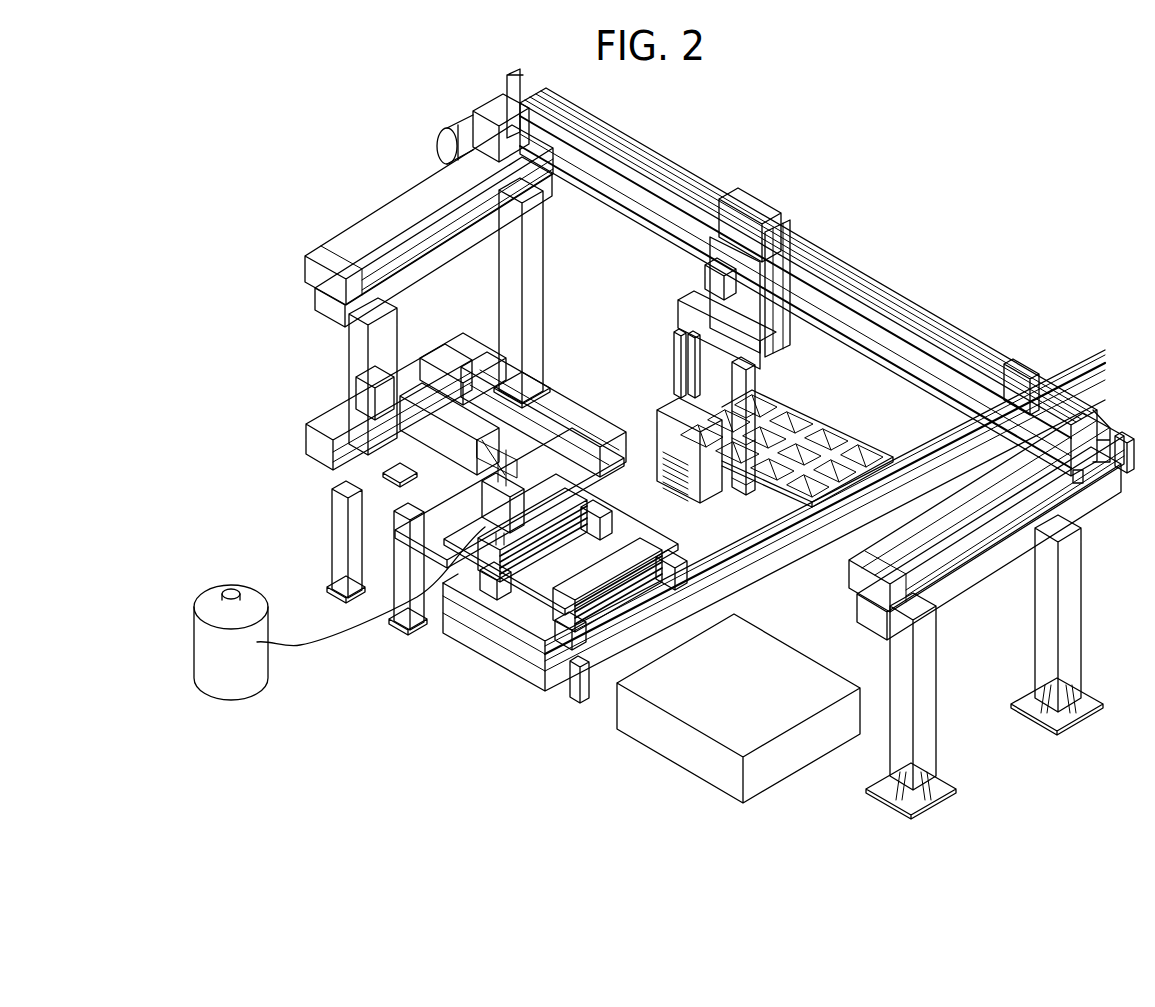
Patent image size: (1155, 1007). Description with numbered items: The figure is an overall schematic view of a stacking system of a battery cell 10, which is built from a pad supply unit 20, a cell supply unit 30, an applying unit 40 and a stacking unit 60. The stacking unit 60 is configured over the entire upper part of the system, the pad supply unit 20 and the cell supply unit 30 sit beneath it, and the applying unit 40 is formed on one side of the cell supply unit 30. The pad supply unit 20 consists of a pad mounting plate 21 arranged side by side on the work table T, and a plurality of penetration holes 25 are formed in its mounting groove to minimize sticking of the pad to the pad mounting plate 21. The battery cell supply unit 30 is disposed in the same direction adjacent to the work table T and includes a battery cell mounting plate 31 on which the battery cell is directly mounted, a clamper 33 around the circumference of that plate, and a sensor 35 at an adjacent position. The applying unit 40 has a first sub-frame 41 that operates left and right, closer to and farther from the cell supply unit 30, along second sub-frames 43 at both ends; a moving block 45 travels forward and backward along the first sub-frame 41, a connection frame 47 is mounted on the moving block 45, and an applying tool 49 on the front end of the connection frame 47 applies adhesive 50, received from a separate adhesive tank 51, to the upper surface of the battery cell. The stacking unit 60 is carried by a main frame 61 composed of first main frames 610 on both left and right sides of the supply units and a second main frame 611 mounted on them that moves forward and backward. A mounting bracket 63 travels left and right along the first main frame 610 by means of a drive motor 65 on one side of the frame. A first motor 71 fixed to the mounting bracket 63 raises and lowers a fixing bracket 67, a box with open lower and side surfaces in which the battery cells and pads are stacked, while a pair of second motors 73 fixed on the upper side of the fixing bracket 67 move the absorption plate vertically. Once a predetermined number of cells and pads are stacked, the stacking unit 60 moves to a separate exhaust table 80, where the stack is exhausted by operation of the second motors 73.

The stacking system of a battery cell 10 is at (879, 179).
The pad supply unit 20 is at (822, 408).
The pad mounting plate 21 is at (893, 452).
The penetration holes 25 is at (868, 458).
The cell supply unit 30 is at (603, 515).
The battery cell mounting plate 31 is at (503, 587).
The clamper 33 is at (572, 627).
The sensor 35 is at (598, 617).
The applying unit 40 is at (577, 421).
The first sub-frame 41 is at (333, 420).
The second sub-frame 43 is at (292, 470).
The moving block 45 is at (353, 393).
The connection frame 47 is at (456, 360).
The applying tool 49 is at (467, 513).
The adhesive 50 is at (467, 583).
The adhesive tank 51 is at (207, 652).
The stacking unit 60 is at (1049, 359).
The main frame 61 is at (181, 135).
The first main frame 610 is at (657, 382).
The second main frame 611 is at (921, 256).
The mounting bracket 63 is at (743, 256).
The drive motor 65 is at (470, 144).
The fixing bracket 67 is at (670, 410).
The first motor 71 is at (707, 293).
The second motor 73 is at (747, 377).
The exhaust table 80 is at (680, 757).
The work table T is at (763, 518).